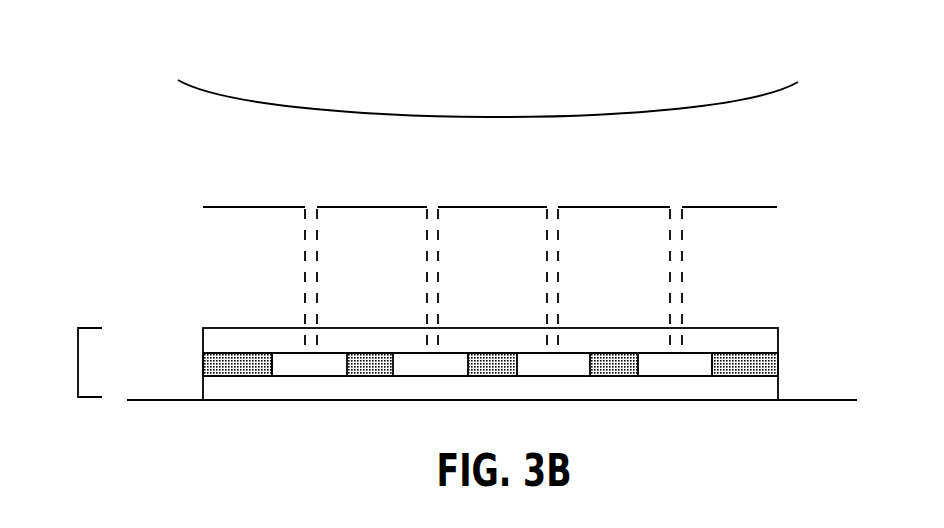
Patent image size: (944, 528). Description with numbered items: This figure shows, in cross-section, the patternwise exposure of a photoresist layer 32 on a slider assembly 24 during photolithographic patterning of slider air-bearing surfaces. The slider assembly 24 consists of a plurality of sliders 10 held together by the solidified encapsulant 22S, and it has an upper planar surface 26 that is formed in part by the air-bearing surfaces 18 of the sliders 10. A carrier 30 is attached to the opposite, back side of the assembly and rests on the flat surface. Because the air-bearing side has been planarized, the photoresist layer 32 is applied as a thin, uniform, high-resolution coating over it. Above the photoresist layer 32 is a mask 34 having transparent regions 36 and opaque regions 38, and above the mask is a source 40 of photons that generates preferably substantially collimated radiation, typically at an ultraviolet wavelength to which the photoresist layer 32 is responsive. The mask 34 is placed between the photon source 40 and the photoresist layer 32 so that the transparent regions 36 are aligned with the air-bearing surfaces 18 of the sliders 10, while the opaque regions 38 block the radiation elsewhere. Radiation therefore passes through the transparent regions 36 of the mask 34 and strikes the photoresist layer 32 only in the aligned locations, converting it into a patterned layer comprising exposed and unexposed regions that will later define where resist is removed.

The source of photons 40 is at (482, 107).
The opaque regions 38 is at (257, 207).
The transparent regions 36 is at (311, 208).
The mask 34 is at (532, 240).
The slider assembly 24 is at (438, 339).
The photoresist layer 32 is at (770, 342).
The carrier 30 is at (770, 388).
The sliders 10 is at (259, 353).
The air-bearing surfaces 18 is at (331, 353).
The surface 26 is at (226, 352).
The encapsulant 22S is at (742, 360).